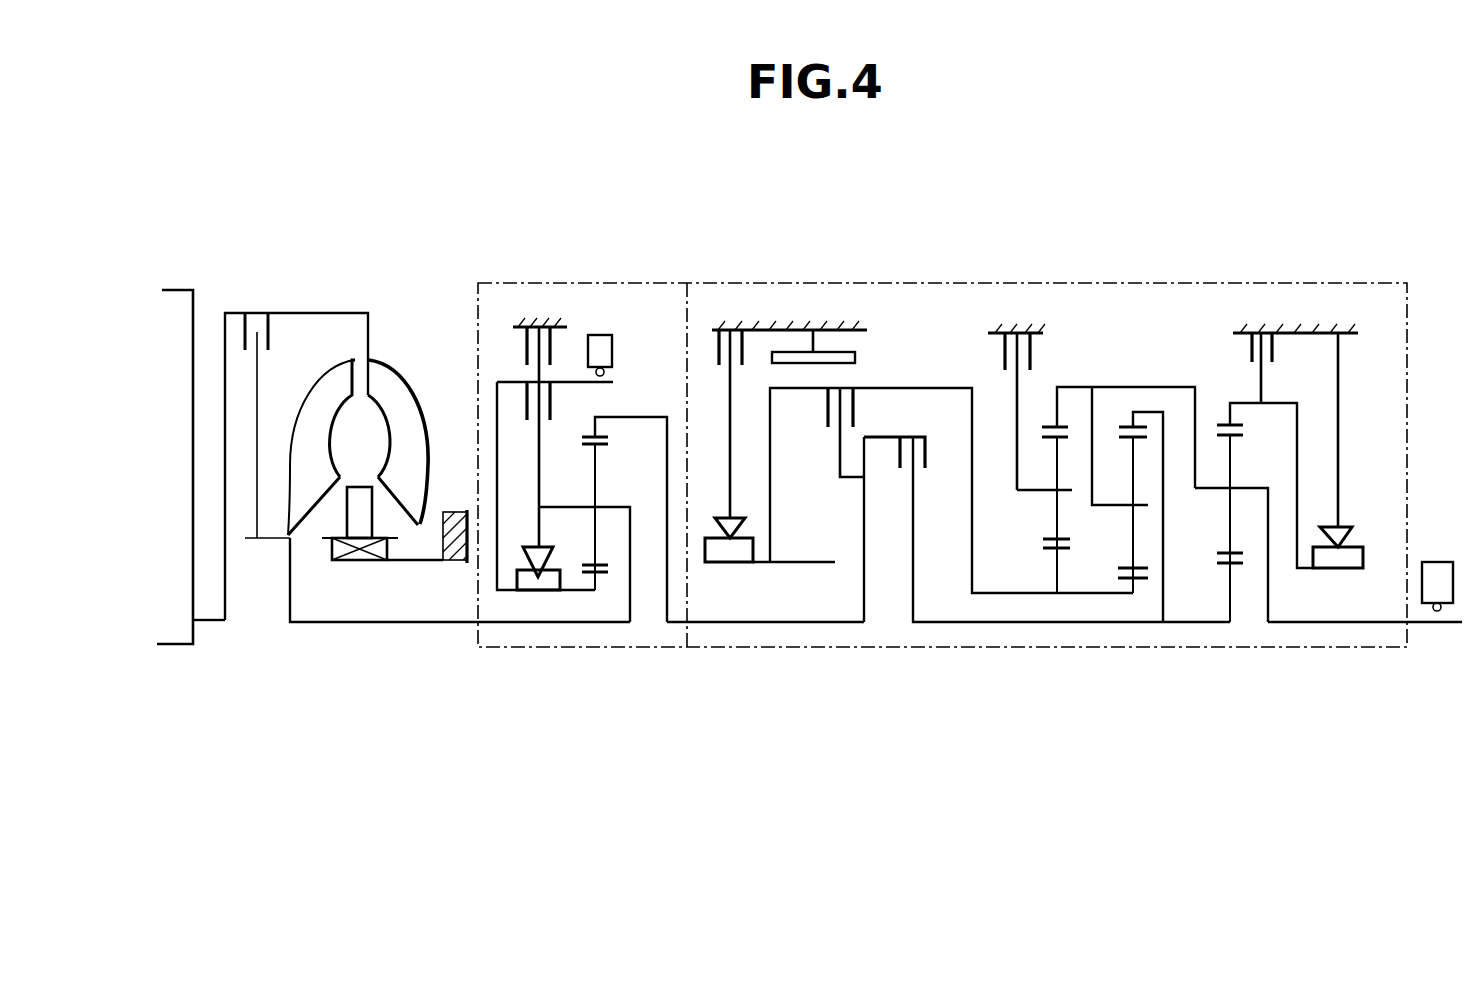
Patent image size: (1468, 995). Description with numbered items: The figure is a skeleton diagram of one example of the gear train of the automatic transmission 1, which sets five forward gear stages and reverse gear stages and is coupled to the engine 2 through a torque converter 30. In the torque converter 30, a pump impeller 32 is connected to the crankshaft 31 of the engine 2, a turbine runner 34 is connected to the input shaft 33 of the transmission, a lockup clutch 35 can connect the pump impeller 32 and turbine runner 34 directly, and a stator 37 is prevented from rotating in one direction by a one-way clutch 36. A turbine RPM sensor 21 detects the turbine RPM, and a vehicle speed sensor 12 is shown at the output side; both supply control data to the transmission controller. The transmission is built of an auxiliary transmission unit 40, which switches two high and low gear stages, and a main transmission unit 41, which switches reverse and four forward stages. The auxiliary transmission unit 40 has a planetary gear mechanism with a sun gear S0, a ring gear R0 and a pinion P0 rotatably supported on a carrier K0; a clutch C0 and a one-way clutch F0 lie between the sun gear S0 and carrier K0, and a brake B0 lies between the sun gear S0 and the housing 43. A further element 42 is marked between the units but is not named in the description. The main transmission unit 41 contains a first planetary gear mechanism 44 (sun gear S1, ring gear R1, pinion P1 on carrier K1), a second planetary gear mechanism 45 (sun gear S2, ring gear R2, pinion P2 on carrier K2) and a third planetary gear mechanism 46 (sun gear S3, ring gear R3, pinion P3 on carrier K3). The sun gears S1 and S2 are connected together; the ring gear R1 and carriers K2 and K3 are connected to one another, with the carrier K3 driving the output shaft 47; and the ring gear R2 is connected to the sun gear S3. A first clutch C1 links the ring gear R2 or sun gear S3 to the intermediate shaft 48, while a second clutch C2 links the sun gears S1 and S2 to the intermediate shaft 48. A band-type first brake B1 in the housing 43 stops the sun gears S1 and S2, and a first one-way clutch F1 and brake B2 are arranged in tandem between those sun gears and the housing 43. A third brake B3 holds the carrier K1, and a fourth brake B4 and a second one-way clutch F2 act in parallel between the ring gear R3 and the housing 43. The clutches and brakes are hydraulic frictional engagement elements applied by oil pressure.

The automatic transmission 1 is at (902, 236).
The engine 2 is at (183, 302).
The vehicle speed sensor 12 is at (1437, 576).
The turbine RPM sensor 21 is at (612, 352).
The torque converter 30 is at (358, 402).
The crankshaft 31 is at (212, 622).
The pump impeller 32 is at (398, 395).
The input shaft 33 is at (388, 624).
The turbine runner 34 is at (335, 380).
The lockup clutch 35 is at (247, 326).
The one-way clutch 36 is at (355, 562).
The stator 37 is at (352, 502).
The auxiliary transmission unit 40 is at (578, 283).
The main transmission unit 41 is at (1215, 283).
The overdrive output shaft 42 is at (587, 596).
The housing 43 is at (452, 562).
The first planetary gear mechanism 44 is at (1092, 529).
The second planetary gear mechanism 45 is at (1116, 528).
The third planetary gear mechanism 46 is at (1272, 524).
The output shaft 47 is at (1375, 625).
The intermediate shaft 48 is at (816, 626).
The brake B0 is at (527, 350).
The clutch C0 is at (527, 400).
The ring gear R0 is at (590, 435).
The pinion P0 is at (590, 446).
The carrier K0 is at (616, 506).
The sun gear S0 is at (585, 570).
The one-way clutch F0 is at (532, 585).
The first brake B1 is at (832, 355).
The brake B2 is at (718, 345).
The third brake B3 is at (1003, 354).
The fourth brake B4 is at (1273, 346).
The first clutch C1 is at (926, 446).
The second clutch C2 is at (828, 405).
The first one-way clutch F1 is at (724, 550).
The second one-way clutch F2 is at (1340, 556).
The ring gear R1 is at (1065, 427).
The ring gear R2 is at (1125, 427).
The ring gear R3 is at (1222, 424).
The pinion P1 is at (1052, 440).
The pinion P2 is at (1125, 565).
The pinion P3 is at (1225, 552).
The carrier K1 is at (1040, 492).
The carrier K2 is at (1110, 505).
The carrier K3 is at (1260, 492).
The sun gear S1 is at (1045, 551).
The sun gear S2 is at (1128, 600).
The sun gear S3 is at (1225, 570).